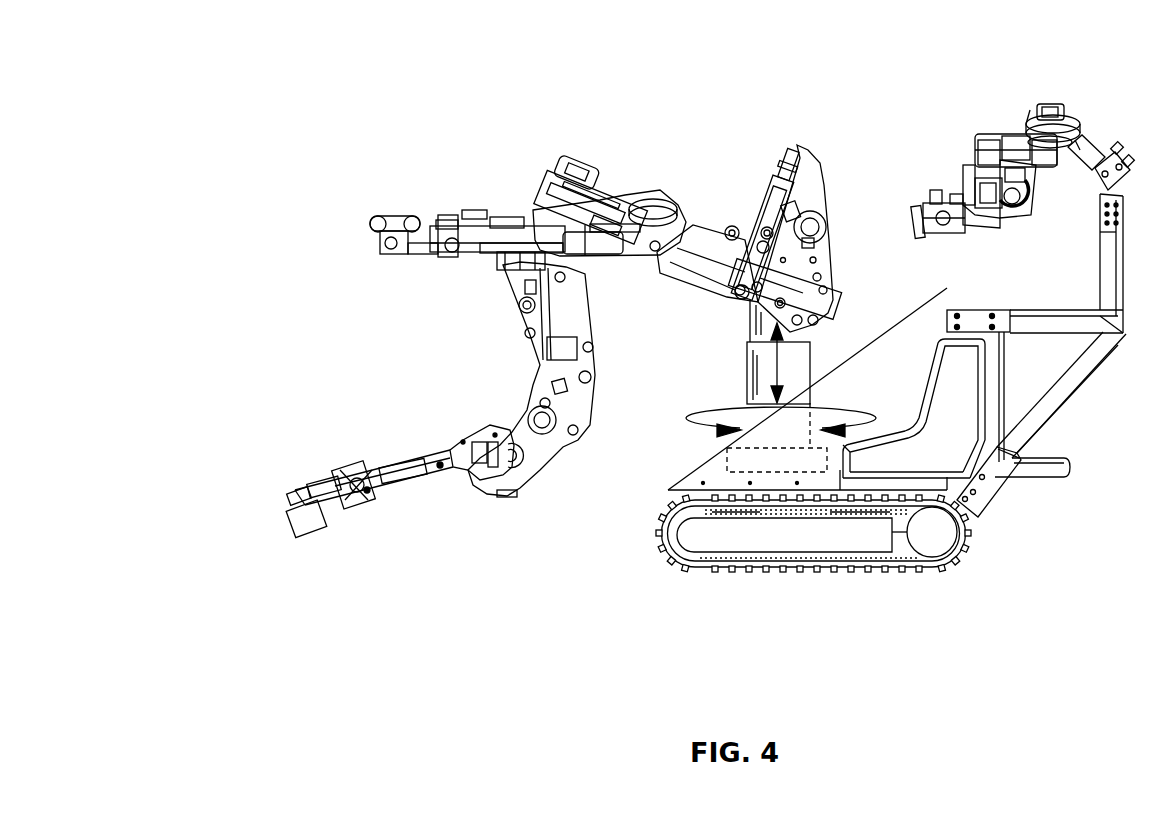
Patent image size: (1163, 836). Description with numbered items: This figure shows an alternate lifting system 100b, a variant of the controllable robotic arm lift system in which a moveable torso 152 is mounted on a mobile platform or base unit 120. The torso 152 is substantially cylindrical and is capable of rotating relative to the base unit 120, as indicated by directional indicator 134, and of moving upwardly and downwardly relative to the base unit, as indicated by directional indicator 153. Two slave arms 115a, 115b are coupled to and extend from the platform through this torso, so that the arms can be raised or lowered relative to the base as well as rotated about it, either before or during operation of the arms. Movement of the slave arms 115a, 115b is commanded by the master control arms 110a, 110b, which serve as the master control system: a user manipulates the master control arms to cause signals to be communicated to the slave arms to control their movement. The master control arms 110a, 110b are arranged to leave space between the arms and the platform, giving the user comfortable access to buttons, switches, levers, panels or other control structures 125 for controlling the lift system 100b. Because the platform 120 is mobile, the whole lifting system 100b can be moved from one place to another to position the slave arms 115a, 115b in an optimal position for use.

The lifting system 100b is at (240, 152).
The master control arm 110a is at (1034, 204).
The master control arm 110b is at (1043, 94).
The slave arm 115a is at (391, 507).
The slave arm 115b is at (426, 211).
The platform 120 is at (927, 480).
The control structures 125 is at (970, 288).
The directional indicator 134 is at (690, 418).
The moveable torso 152 is at (816, 345).
The directional indicator 153 is at (773, 351).